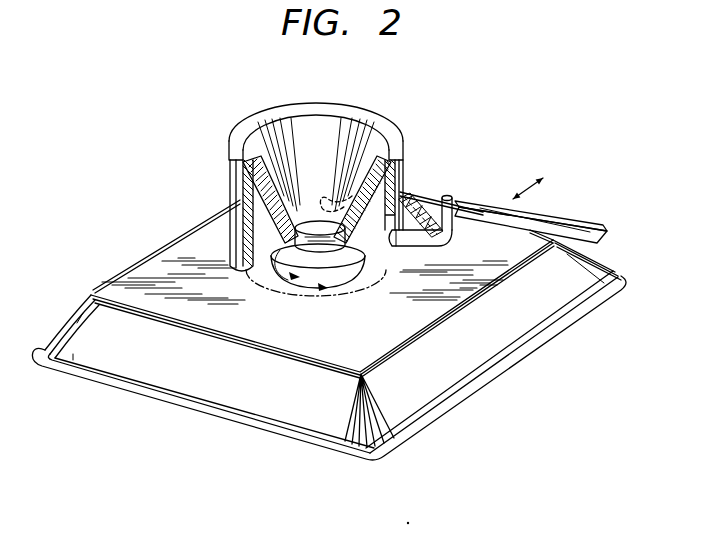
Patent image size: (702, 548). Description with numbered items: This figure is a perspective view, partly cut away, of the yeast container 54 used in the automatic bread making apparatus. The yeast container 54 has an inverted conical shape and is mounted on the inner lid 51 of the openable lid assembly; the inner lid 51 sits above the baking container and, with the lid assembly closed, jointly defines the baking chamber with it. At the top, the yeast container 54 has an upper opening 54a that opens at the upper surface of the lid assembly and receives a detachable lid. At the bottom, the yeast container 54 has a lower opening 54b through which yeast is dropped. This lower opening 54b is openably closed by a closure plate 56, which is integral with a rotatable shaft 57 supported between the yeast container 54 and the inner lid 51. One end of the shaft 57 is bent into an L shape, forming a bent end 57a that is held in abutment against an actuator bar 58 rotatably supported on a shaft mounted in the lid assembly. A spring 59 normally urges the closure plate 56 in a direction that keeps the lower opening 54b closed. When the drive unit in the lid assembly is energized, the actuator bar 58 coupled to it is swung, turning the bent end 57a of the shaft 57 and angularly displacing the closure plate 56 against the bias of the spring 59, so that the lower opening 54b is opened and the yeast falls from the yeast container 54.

The inner lid 51 is at (493, 348).
The yeast container 54 is at (394, 137).
The upper opening 54a is at (360, 128).
The lower opening 54b is at (351, 251).
The closure plate 56 is at (274, 250).
The rotatable shaft 57 is at (447, 197).
The bent end 57a is at (453, 237).
The actuator bar 58 is at (582, 227).
The spring 59 is at (352, 196).